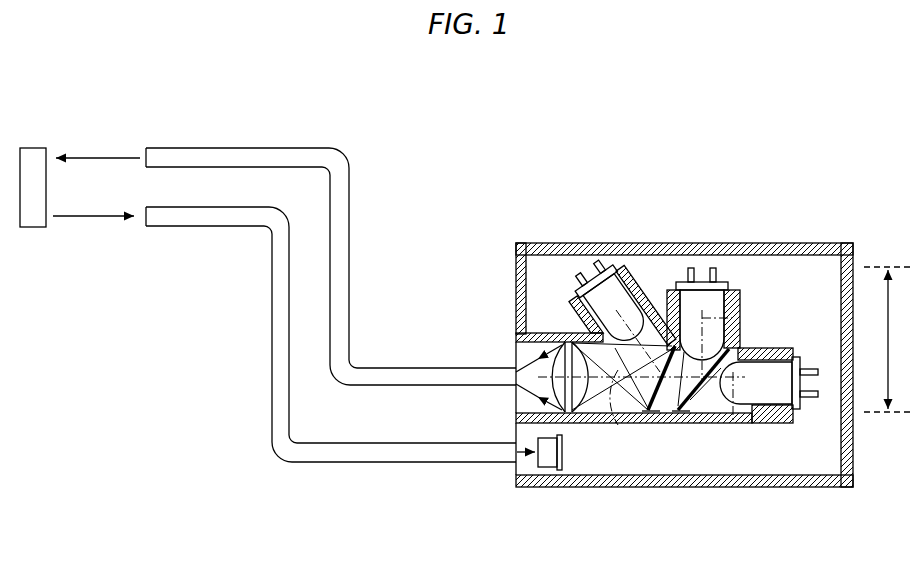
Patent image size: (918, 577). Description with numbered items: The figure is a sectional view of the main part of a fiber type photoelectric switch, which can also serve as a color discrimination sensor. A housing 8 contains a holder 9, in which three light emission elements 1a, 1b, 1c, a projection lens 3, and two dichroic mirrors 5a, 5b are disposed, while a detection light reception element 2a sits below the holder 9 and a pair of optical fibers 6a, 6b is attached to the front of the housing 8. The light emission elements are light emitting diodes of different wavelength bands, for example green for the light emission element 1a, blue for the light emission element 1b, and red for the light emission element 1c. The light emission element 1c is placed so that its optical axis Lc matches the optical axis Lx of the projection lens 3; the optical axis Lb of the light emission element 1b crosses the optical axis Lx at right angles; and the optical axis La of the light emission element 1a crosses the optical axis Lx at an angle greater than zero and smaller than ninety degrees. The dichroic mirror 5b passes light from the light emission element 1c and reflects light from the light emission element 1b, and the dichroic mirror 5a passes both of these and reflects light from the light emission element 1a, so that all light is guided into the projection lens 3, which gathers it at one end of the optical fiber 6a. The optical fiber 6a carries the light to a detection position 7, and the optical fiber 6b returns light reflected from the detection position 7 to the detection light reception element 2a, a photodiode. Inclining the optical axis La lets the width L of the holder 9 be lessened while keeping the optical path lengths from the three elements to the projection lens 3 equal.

The light emission element 1a is at (632, 292).
The light emission element 1b is at (720, 302).
The light emission element 1c is at (783, 362).
The detection light reception element 2a is at (549, 461).
The projection lens 3 is at (572, 416).
The dichroic mirror 5a is at (662, 405).
The dichroic mirror 5b is at (697, 405).
The optical fiber 6a is at (350, 170).
The optical fiber 6b is at (271, 275).
The detection position 7 is at (33, 148).
The housing 8 is at (566, 243).
The holder 9 is at (775, 423).
The optical axis of light emission element 1a La is at (642, 306).
The optical axis of light emission element 1b Lb is at (734, 319).
The optical axis of light emission element 1c Lc is at (734, 423).
The optical axis of projection lens Lx is at (609, 423).
The width of holder L is at (888, 339).